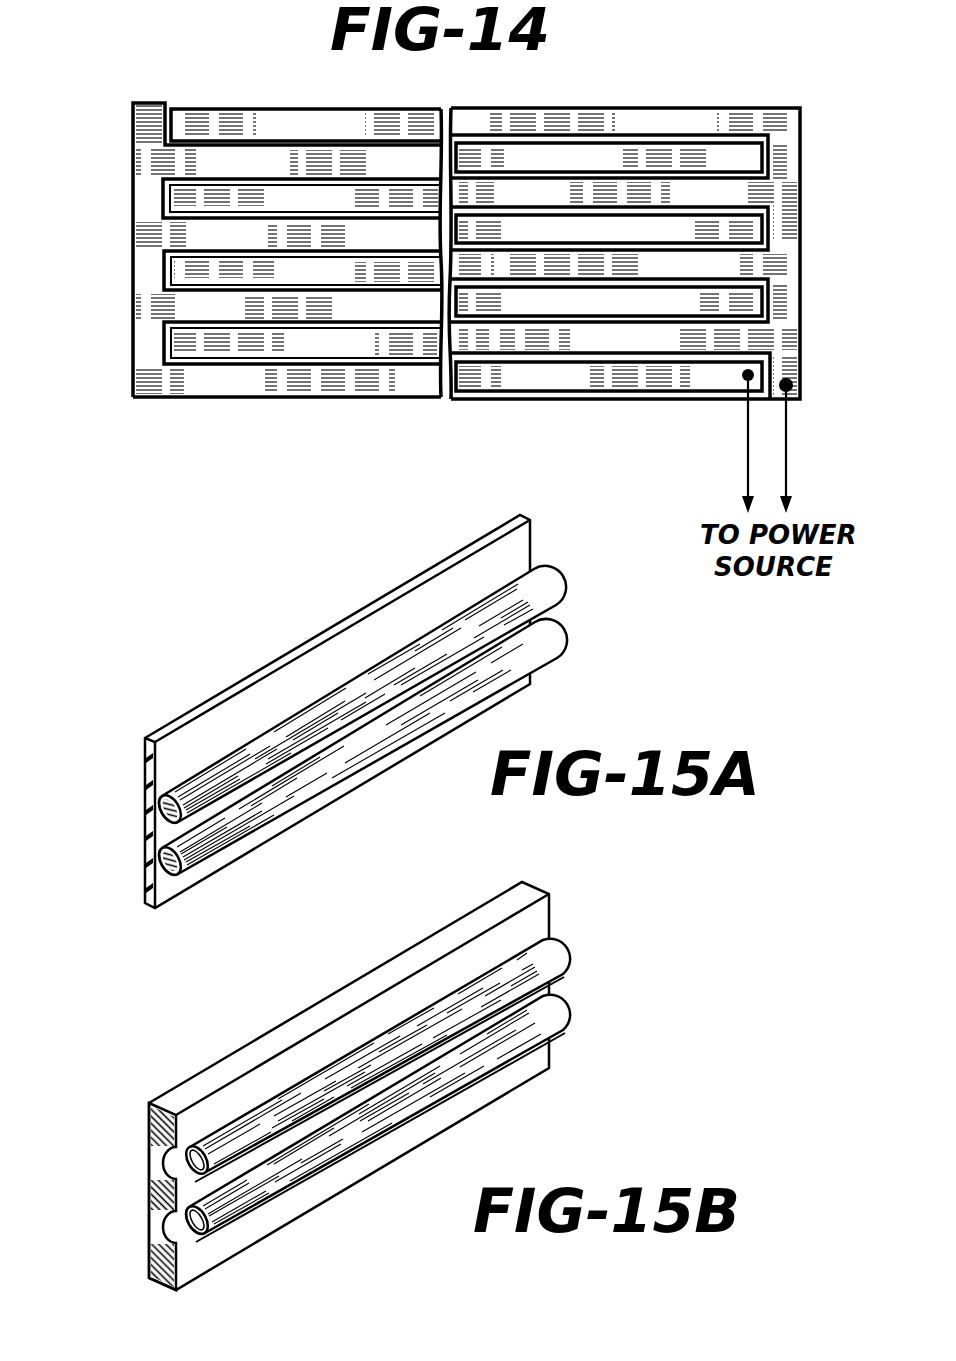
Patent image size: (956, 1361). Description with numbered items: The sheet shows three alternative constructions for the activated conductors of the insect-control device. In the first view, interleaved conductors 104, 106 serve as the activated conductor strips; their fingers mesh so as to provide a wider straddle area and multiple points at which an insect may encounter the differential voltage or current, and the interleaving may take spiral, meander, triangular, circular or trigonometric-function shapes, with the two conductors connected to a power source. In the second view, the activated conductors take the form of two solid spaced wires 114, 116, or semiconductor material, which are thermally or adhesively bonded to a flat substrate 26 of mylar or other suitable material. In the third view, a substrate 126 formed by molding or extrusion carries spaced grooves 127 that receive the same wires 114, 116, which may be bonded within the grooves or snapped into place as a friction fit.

In FIG. 14, the interleaved conductor 104 is at (800, 157).
In FIG. 14, the interleaved conductor 106 is at (133, 152).
In FIG. 15A, the substrate 26 is at (238, 702).
In FIG. 15A, the wire 114 is at (551, 582).
In FIG. 15B, the wire 114 is at (563, 952).
In FIG. 15A, the wire 116 is at (558, 642).
In FIG. 15B, the wire 116 is at (556, 1011).
In FIG. 15B, the substrate 126 is at (338, 1121).
In FIG. 15B, the groove 127 is at (183, 1152).